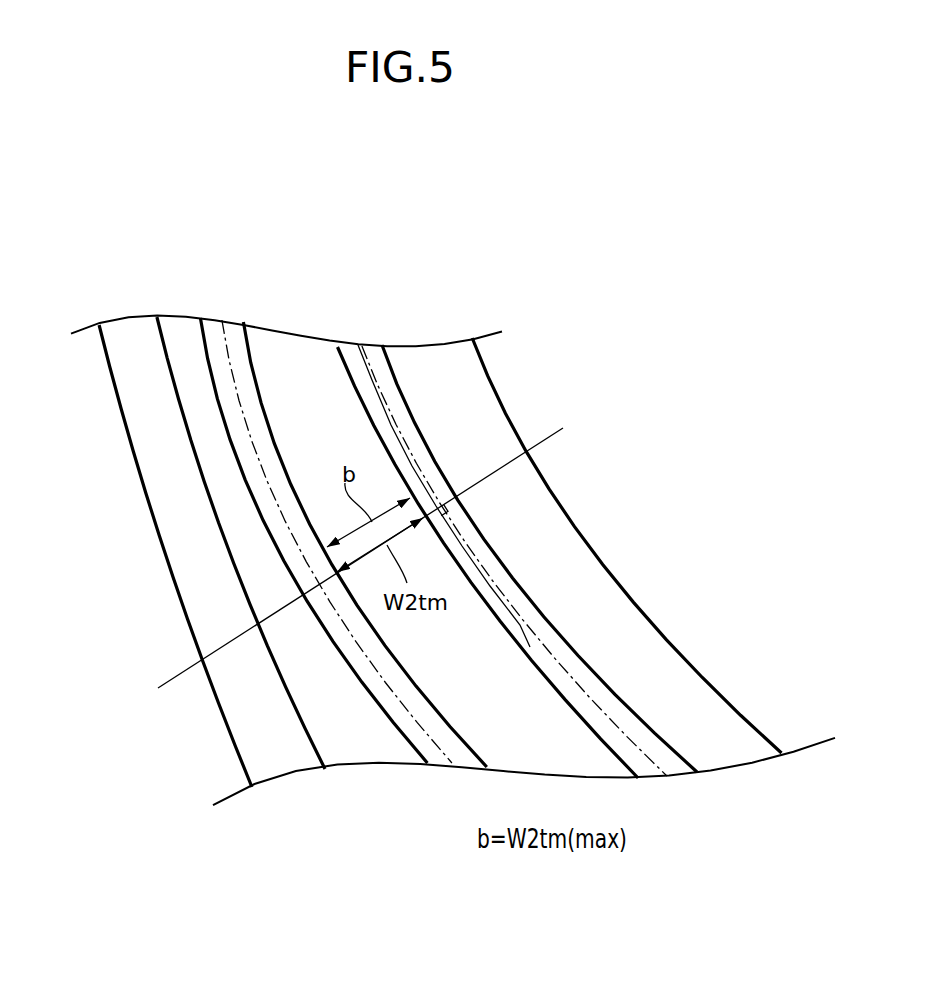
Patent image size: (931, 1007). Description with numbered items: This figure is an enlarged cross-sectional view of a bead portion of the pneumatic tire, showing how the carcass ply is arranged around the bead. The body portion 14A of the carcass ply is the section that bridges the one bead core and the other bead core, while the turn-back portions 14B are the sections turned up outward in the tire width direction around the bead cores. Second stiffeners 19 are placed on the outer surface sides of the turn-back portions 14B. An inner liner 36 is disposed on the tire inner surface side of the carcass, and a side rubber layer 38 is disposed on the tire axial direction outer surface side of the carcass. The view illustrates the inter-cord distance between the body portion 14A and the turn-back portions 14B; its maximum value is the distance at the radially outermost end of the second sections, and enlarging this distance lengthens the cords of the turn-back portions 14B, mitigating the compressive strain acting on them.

The body portion 14A is at (440, 457).
The turn-back portions 14B is at (270, 532).
The second stiffeners 19 is at (367, 748).
The inner liner 36 is at (640, 640).
The side rubber layer 38 is at (278, 758).